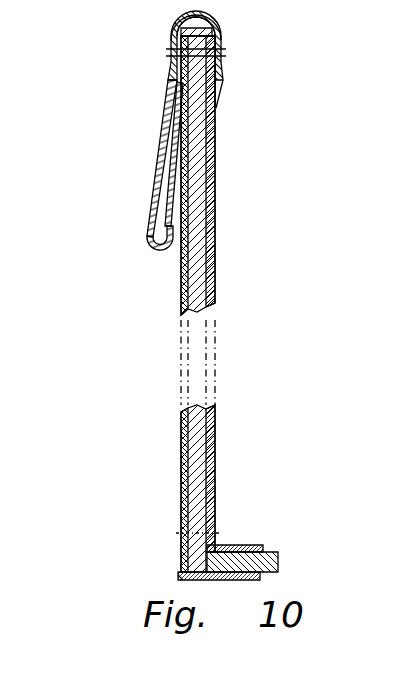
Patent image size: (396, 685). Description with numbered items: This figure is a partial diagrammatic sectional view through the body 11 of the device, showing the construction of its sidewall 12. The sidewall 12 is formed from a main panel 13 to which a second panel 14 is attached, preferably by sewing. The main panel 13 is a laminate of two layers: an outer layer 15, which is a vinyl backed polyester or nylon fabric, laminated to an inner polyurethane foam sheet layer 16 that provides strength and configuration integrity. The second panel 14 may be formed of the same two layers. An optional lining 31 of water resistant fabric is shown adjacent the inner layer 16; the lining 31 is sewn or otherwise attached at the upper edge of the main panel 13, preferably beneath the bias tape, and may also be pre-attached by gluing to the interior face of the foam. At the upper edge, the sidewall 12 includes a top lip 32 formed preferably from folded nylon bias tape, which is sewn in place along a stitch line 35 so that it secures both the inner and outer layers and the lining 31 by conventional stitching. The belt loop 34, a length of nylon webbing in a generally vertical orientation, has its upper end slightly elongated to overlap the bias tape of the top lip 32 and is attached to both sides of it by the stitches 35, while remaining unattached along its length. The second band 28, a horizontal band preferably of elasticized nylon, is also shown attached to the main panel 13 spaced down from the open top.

The body 11 is at (160, 20).
The sidewall 12 is at (148, 332).
The main panel 13 is at (180, 282).
The second panel 14 is at (245, 586).
The outer layer 15 is at (180, 533).
The inner polyurethane foam sheet layer 16 is at (213, 483).
The second band 28 is at (160, 170).
The lining 31 is at (216, 270).
The top lip 32 is at (208, 28).
The belt loop 34 is at (147, 228).
The stitch line 35 is at (220, 62).